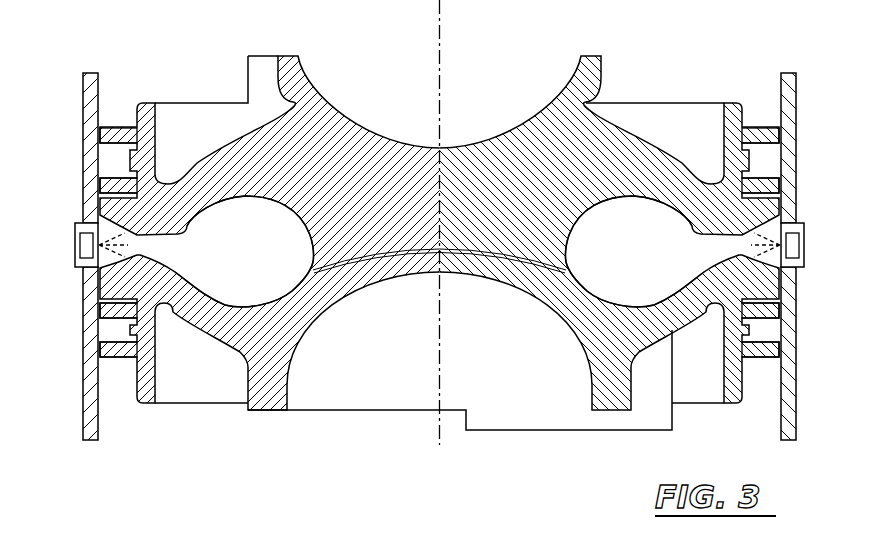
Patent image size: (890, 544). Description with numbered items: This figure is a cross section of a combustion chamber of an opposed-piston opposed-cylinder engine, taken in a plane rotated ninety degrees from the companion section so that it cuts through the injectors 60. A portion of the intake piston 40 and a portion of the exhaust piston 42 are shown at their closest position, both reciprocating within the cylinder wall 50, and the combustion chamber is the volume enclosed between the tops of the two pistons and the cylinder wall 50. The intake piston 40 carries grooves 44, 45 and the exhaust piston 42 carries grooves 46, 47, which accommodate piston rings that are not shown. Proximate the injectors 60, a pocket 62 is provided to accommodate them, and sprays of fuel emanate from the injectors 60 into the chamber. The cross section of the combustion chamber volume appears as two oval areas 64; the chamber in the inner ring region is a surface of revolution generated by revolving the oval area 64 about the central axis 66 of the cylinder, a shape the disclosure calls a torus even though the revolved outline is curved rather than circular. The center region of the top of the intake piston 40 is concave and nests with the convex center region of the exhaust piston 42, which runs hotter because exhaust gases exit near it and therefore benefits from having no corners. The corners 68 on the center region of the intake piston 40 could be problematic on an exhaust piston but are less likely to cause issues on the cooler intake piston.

The intake piston 40 is at (457, 57).
The exhaust piston 42 is at (412, 410).
The groove 44 is at (113, 192).
The groove 45 is at (113, 152).
The groove 46 is at (113, 312).
The groove 47 is at (113, 351).
The cylinder wall 50 is at (93, 105).
The injector 60 is at (80, 264).
The pocket 62 is at (123, 235).
The oval area 64 is at (263, 267).
The central axis 66 is at (439, 23).
The corner 68 is at (325, 257).